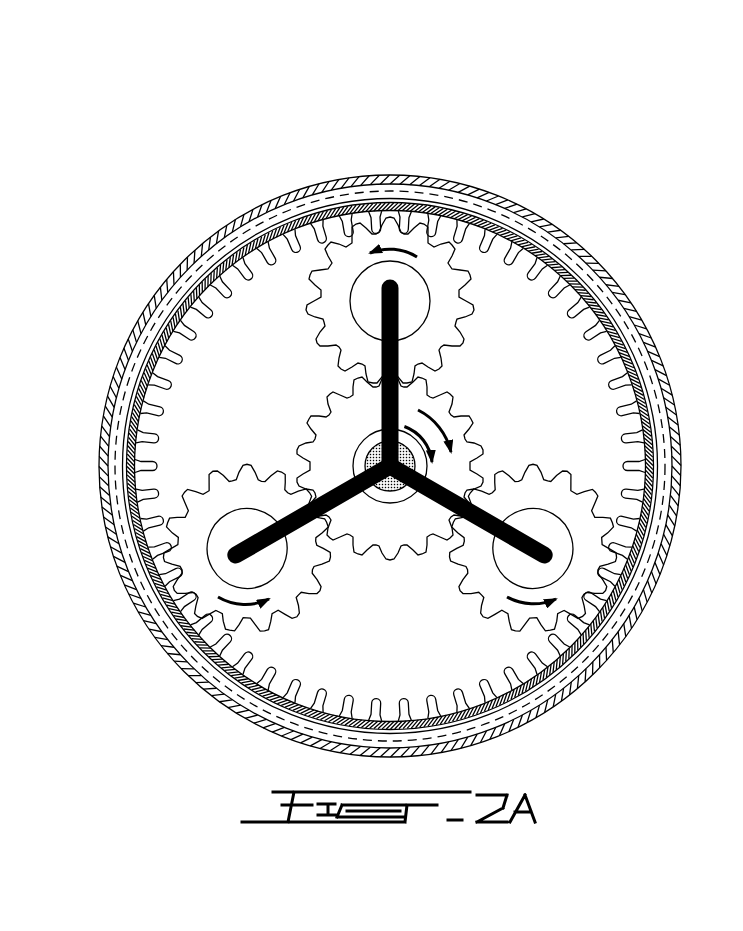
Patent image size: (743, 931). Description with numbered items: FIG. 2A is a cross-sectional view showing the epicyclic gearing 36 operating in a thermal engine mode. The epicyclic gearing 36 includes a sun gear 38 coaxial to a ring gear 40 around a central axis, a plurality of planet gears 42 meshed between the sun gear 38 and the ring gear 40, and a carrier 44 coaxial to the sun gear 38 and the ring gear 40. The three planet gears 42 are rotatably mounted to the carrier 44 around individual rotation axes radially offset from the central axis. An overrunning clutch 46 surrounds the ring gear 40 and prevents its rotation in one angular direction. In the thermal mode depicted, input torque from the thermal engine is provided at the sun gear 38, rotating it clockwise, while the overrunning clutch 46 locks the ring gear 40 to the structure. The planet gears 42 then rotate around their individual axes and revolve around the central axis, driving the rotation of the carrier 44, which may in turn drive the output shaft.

The epicyclic gearing 36 is at (287, 170).
The sun gear 38 is at (430, 428).
The ring gear 40 is at (500, 235).
The planet gears 42 is at (588, 535).
The carrier 44 is at (460, 503).
The overrunning clutch 46 is at (447, 186).